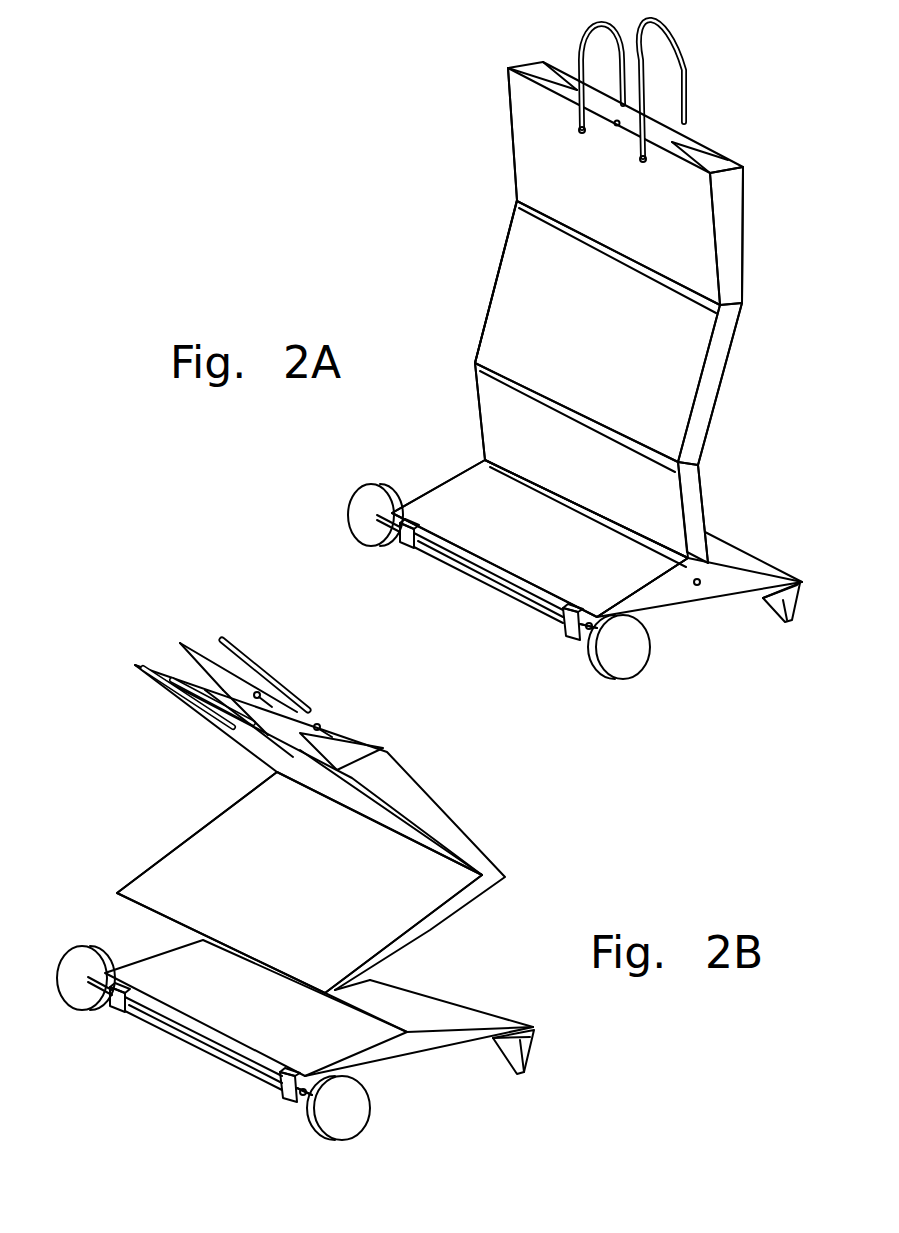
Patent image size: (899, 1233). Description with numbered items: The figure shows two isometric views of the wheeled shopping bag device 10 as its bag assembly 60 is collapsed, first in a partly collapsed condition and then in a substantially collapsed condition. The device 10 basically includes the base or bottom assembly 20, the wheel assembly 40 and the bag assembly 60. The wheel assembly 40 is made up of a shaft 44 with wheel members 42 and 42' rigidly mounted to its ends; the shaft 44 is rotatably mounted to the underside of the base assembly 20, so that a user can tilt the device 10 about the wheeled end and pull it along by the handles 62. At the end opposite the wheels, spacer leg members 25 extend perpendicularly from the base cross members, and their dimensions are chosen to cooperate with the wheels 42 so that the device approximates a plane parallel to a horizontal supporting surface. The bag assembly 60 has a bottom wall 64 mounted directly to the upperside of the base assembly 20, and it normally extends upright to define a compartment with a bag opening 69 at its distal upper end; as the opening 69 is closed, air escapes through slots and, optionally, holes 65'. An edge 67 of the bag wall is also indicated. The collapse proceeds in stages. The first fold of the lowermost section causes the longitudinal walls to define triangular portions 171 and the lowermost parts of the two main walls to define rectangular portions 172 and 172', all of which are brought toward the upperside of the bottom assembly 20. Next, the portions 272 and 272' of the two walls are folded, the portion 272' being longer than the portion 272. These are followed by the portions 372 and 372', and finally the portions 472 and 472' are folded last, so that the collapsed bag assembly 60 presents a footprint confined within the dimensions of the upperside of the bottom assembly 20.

In FIG. 2A, the wheeled bag device 10 is at (337, 74).
In FIG. 2A, the base or bottom assembly 20 is at (722, 606).
In FIG. 2A, the spacer leg member 25 is at (793, 600).
In FIG. 2B, the spacer leg member 25 is at (528, 1052).
In FIG. 2A, the wheel assembly 40 is at (646, 682).
In FIG. 2B, the wheel assembly 40 is at (240, 1067).
In FIG. 2A, the wheel member 42 is at (606, 693).
In FIG. 2B, the wheel member 42 is at (310, 1128).
In FIG. 2A, the wheel member 42' is at (331, 515).
In FIG. 2B, the wheel member 42' is at (77, 1012).
In FIG. 2A, the shaft 44 is at (490, 583).
In FIG. 2B, the shaft 44 is at (170, 1027).
In FIG. 2A, the bag assembly 60 is at (490, 302).
In FIG. 2B, the bag assembly 60 is at (197, 830).
In FIG. 2A, the handles 62 is at (685, 77).
In FIG. 2B, the handles 62 is at (260, 656).
In FIG. 2B, the bottom wall 64 is at (447, 1053).
In FIG. 2A, the hole 65' is at (724, 637).
In FIG. 2A, the bag side edge 67 is at (506, 247).
In FIG. 2A, the bag opening 69 is at (658, 135).
In FIG. 2B, the bag opening 69 is at (290, 717).
In FIG. 2A, the triangular portion 171 is at (662, 592).
In FIG. 2B, the triangular portion 171 is at (423, 1043).
In FIG. 2A, the rectangular portion 172 is at (540, 538).
In FIG. 2B, the rectangular portion 172 is at (256, 1008).
In FIG. 2A, the rectangular portion 172' is at (703, 546).
In FIG. 2A, the wall portion 272 is at (581, 465).
In FIG. 2B, the wall portion 272 is at (389, 1079).
In FIG. 2A, the wall portion 272' is at (750, 490).
In FIG. 2A, the wall portion 372 is at (597, 336).
In FIG. 2B, the wall portion 372 is at (299, 882).
In FIG. 2A, the wall portion 372' is at (752, 384).
In FIG. 2A, the wall portion 472 is at (614, 190).
In FIG. 2B, the wall portion 472 is at (321, 827).
In FIG. 2A, the wall portion 472' is at (772, 236).